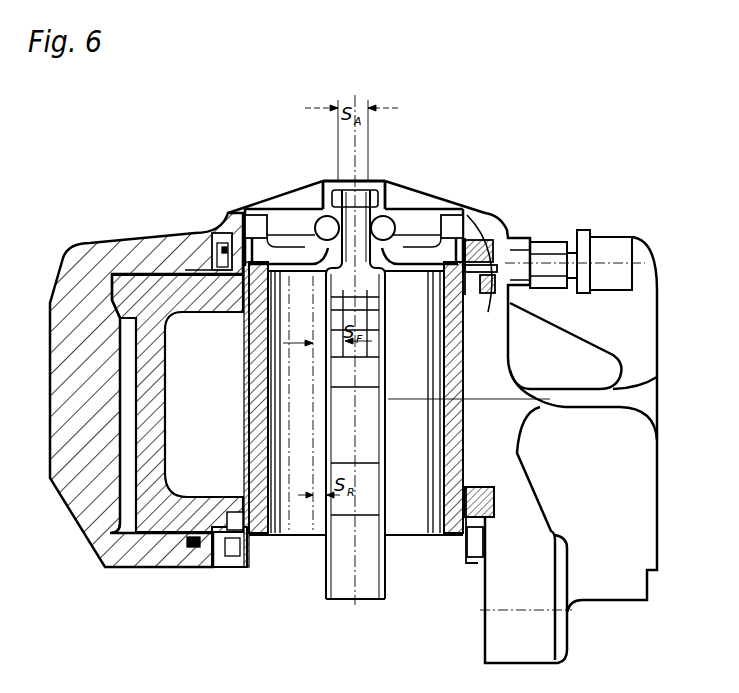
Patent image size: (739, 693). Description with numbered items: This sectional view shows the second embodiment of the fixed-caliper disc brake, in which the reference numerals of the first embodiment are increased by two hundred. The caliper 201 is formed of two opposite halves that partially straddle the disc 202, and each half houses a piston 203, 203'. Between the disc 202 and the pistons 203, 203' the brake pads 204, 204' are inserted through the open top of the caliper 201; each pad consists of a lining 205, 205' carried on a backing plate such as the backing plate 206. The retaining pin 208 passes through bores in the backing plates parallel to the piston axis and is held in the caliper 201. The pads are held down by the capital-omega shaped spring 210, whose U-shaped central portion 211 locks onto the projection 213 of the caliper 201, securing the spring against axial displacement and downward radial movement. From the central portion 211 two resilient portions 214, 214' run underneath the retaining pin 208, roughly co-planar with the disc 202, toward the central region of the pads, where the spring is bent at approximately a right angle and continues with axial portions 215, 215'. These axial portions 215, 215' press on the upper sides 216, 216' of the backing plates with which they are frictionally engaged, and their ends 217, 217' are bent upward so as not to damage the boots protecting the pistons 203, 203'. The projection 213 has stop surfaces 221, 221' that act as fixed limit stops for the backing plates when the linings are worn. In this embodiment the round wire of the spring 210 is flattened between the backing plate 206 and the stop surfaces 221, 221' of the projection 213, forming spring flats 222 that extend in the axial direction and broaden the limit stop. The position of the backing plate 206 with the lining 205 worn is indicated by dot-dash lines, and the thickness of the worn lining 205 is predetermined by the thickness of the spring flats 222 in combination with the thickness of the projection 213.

The caliper 201 is at (163, 257).
The disc 202 is at (337, 568).
The piston 203 is at (177, 403).
The piston 203' is at (520, 508).
The pad 204 is at (240, 432).
The pad 204' is at (419, 573).
The brake lining 205 is at (255, 403).
The brake lining 205' is at (469, 425).
The backing plate 206 is at (495, 487).
The retaining pin 208 is at (417, 255).
The spring 210 is at (318, 200).
The U-shaped central portion 211 is at (330, 178).
The projection 213 is at (380, 180).
The resilient portion 214 is at (287, 403).
The resilient portion 214' is at (424, 403).
The axial portion 215 is at (236, 201).
The axial portion 215' is at (462, 192).
The upper side of backing plate 216 is at (239, 397).
The upper side of backing plate 216' is at (428, 397).
The end of axial portion 217 is at (201, 226).
The end of axial portion 217' is at (496, 232).
The stop surface 221 is at (314, 196).
The stop surface 221' is at (399, 196).
The spring flat 222 is at (324, 228).